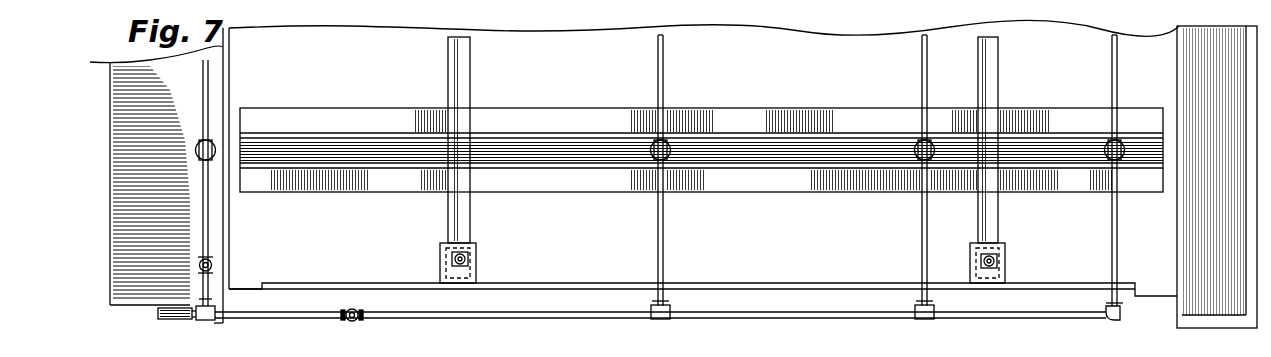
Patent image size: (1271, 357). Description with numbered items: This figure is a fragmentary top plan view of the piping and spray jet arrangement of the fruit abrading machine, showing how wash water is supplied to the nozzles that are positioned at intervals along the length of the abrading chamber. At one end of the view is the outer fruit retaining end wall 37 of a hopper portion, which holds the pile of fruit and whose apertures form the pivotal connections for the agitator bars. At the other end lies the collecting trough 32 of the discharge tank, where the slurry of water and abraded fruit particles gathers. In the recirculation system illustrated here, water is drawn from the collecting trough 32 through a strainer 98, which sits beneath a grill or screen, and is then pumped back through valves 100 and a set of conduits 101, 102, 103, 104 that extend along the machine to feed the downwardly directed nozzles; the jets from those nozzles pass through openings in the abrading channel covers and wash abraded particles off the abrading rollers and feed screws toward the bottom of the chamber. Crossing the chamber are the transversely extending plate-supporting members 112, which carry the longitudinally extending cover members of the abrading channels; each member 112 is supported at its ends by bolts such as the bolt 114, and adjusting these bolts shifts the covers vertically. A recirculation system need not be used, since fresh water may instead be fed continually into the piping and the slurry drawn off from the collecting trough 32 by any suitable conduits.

The collecting trough 32 is at (134, 300).
The outer fruit retaining end wall 37 is at (735, 188).
The strainer 98 is at (170, 319).
The valve 100 is at (352, 320).
The conduit 101 is at (547, 322).
The conduit 102 is at (664, 250).
The conduit 103 is at (921, 228).
The conduit 104 is at (1120, 238).
The plate-supporting member 112 is at (471, 222).
The bolt 114 is at (466, 260).